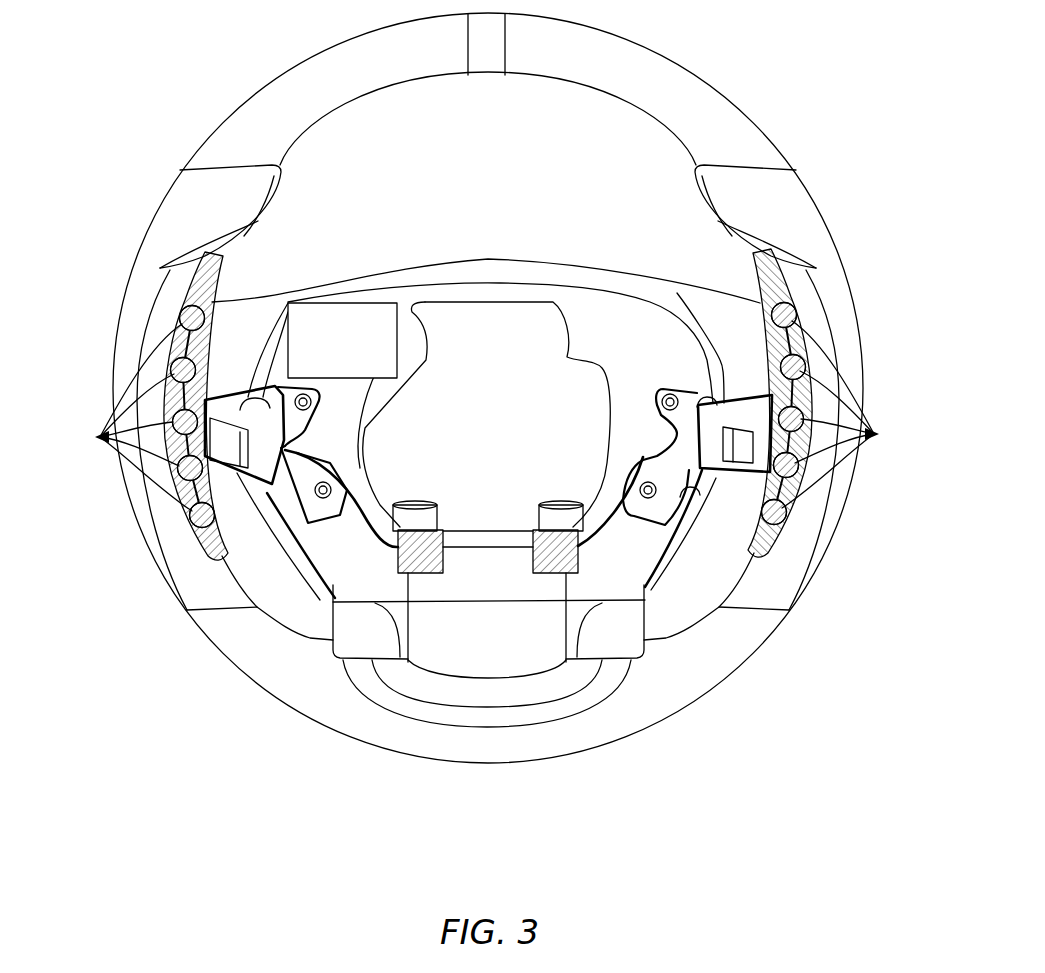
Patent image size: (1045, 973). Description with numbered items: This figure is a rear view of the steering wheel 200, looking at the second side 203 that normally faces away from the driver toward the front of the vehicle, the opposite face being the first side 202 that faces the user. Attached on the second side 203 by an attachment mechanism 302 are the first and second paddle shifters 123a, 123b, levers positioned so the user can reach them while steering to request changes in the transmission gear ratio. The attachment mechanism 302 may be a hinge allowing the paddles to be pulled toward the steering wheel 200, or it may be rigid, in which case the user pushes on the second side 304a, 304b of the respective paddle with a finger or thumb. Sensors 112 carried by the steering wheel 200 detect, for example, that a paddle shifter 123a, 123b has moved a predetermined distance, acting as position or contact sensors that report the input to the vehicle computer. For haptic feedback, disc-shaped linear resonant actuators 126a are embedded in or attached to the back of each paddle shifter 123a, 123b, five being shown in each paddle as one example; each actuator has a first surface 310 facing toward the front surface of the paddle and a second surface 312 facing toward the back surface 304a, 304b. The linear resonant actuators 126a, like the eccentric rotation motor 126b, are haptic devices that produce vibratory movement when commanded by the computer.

The steering wheel 200 is at (663, 50).
The first side 202 is at (323, 78).
The second side 203 is at (297, 683).
The attachment mechanism 302 is at (289, 304).
The second side of first paddle shifter 304a is at (744, 268).
The second side of second paddle shifter 304b is at (228, 270).
The first surface 310 is at (158, 350).
The second surface 312 is at (206, 318).
The first paddle shifter 123a is at (782, 270).
The second paddle shifter 123b is at (190, 300).
The linear resonant actuator 126a is at (860, 414).
The eccentric rotation motor 126b is at (113, 417).
The sensors 112 is at (334, 365).